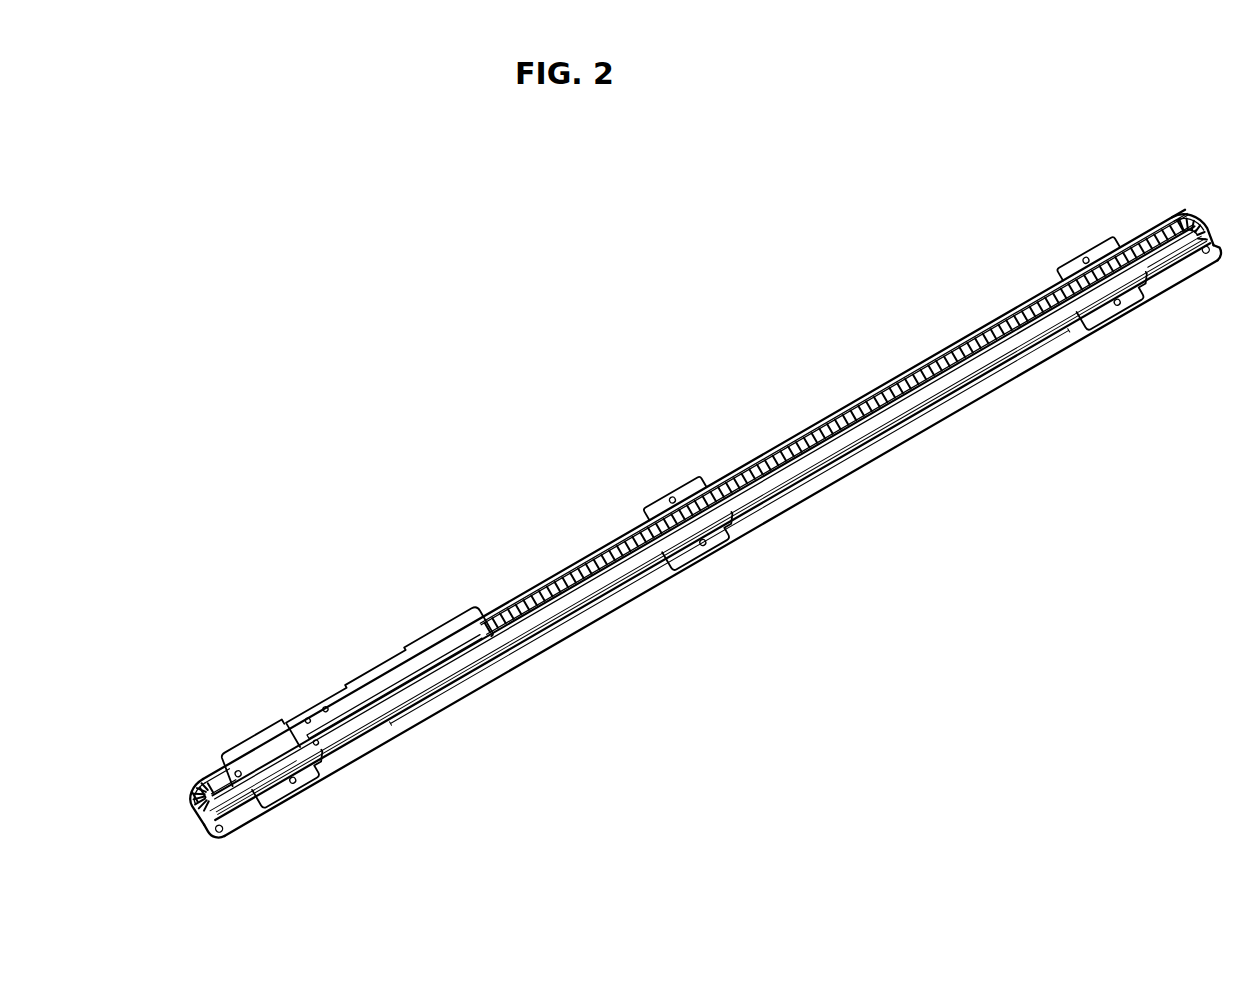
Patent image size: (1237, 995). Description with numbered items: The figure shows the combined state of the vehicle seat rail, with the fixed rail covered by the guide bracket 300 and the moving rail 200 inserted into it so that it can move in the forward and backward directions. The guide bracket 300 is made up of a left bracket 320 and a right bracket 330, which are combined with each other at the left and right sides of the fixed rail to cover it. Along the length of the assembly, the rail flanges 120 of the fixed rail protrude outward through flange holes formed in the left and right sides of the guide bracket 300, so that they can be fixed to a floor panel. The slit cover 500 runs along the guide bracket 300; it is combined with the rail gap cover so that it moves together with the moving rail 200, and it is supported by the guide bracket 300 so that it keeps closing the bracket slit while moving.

The rail flange 120 is at (662, 498).
The moving rail 200 is at (373, 688).
The guide bracket 300 is at (491, 688).
The left bracket 320 is at (992, 318).
The right bracket 330 is at (943, 388).
The slit cover 500 is at (862, 405).